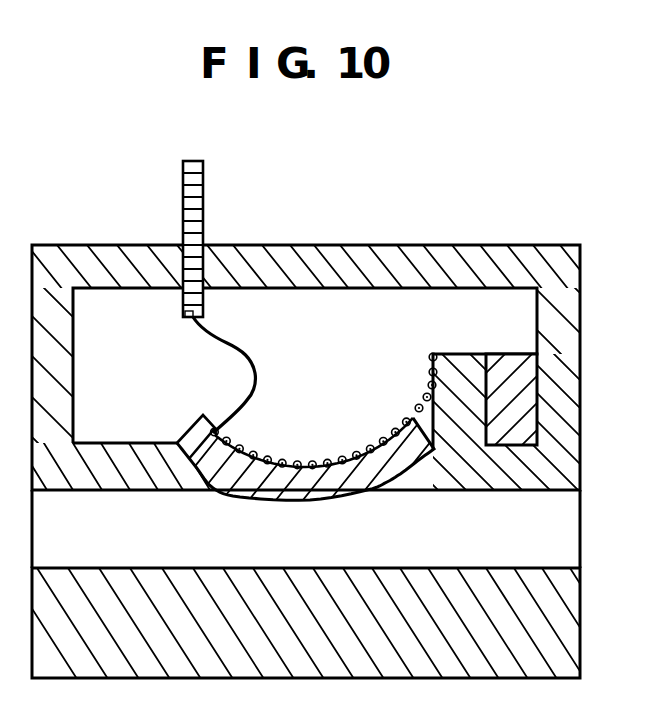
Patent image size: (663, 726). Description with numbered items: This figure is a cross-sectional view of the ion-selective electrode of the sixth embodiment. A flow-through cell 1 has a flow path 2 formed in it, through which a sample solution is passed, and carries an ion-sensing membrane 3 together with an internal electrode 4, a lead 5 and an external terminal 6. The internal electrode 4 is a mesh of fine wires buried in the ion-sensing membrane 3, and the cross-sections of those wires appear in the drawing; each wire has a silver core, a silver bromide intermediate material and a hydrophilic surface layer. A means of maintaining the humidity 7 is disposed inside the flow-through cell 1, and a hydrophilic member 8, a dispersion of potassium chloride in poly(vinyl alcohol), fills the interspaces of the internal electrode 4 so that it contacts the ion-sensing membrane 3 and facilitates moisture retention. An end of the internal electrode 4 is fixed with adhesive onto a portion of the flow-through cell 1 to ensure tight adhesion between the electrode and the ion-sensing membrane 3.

The flow-through cell 1 is at (573, 628).
The flow path 2 is at (568, 542).
The ion-sensing membrane 3 is at (187, 432).
The internal electrode 4 is at (274, 457).
The lead 5 is at (236, 406).
The external terminal 6 is at (203, 197).
The means of maintaining the humidity 7 is at (530, 400).
The hydrophilic member 8 is at (247, 440).